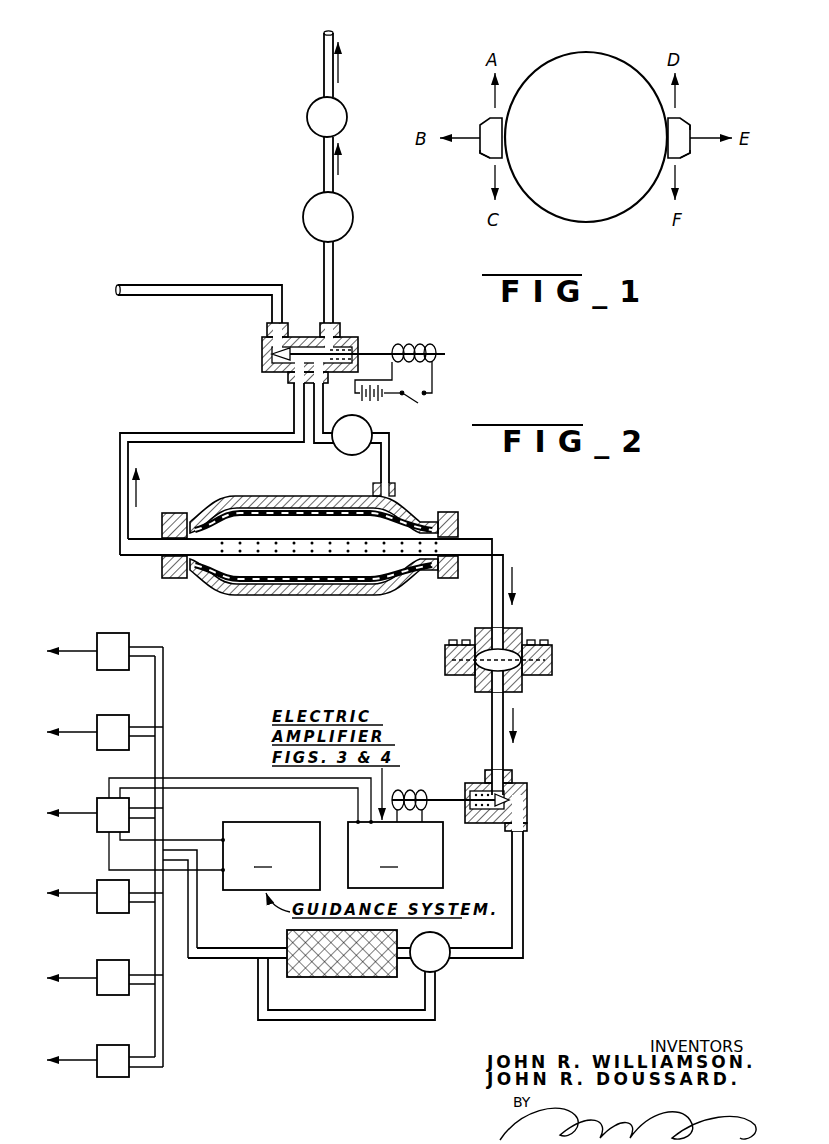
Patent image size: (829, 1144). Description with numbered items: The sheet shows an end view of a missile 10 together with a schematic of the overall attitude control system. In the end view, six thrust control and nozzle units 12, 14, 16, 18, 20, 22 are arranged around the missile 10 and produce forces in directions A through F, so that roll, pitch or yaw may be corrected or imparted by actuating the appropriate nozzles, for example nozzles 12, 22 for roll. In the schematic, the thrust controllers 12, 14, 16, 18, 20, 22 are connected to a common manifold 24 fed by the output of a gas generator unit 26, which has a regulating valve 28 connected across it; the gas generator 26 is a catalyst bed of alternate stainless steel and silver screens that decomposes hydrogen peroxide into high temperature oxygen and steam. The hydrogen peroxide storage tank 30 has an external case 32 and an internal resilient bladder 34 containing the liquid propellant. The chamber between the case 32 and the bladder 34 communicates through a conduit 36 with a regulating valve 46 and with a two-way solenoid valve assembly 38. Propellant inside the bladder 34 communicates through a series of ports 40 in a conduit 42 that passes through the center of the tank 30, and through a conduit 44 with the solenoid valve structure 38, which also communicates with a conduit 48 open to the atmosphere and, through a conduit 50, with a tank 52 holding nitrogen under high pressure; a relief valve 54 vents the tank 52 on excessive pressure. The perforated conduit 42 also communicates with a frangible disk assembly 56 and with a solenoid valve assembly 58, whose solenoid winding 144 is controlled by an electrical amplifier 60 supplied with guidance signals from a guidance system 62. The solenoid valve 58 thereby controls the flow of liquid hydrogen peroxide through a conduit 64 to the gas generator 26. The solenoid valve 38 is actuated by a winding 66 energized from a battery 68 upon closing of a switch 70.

In FIG. 1, the missile 10 is at (602, 212).
In FIG. 1, the thrust control and nozzle unit 12 is at (490, 116).
In FIG. 2, the thrust control and nozzle unit 12 is at (100, 664).
In FIG. 2, the thrust control and nozzle unit 14 is at (102, 744).
In FIG. 1, the thrust control and nozzle unit 16 is at (488, 161).
In FIG. 2, the thrust control and nozzle unit 16 is at (103, 826).
In FIG. 1, the thrust control and nozzle unit 18 is at (683, 115).
In FIG. 2, the thrust control and nozzle unit 18 is at (103, 908).
In FIG. 1, the thrust control and nozzle unit 20 is at (692, 128).
In FIG. 2, the thrust control and nozzle unit 20 is at (103, 990).
In FIG. 1, the thrust control and nozzle unit 22 is at (683, 162).
In FIG. 2, the thrust control and nozzle unit 22 is at (103, 1072).
In FIG. 2, the common manifold 24 is at (164, 793).
In FIG. 2, the gas generator unit 26 is at (297, 932).
In FIG. 2, the regulating valve 28 is at (440, 970).
In FIG. 2, the hydrogen peroxide storage tank 30 is at (405, 505).
In FIG. 2, the external case 32 is at (460, 522).
In FIG. 2, the internal resilient bladder 34 is at (375, 581).
In FIG. 2, the conduit 36 is at (390, 463).
In FIG. 2, the two-way solenoid valve assembly 38 is at (356, 336).
In FIG. 2, the ports 40 is at (262, 542).
In FIG. 2, the conduit 42 is at (377, 540).
In FIG. 2, the conduit 44 is at (120, 495).
In FIG. 2, the regulating valve 46 is at (338, 456).
In FIG. 2, the conduit 48 is at (178, 285).
In FIG. 2, the conduit 50 is at (324, 252).
In FIG. 2, the tank 52 is at (303, 217).
In FIG. 2, the relief valve 54 is at (307, 117).
In FIG. 2, the frangible disk assembly 56 is at (552, 668).
In FIG. 2, the solenoid valve assembly 58 is at (527, 795).
In FIG. 2, the electrical amplifier 60 is at (395, 855).
In FIG. 2, the guidance system 62 is at (271, 856).
In FIG. 2, the conduit 64 is at (500, 958).
In FIG. 2, the winding 66 is at (404, 343).
In FIG. 2, the battery 68 is at (378, 404).
In FIG. 2, the switch 70 is at (412, 401).
In FIG. 2, the solenoid winding 144 is at (408, 790).